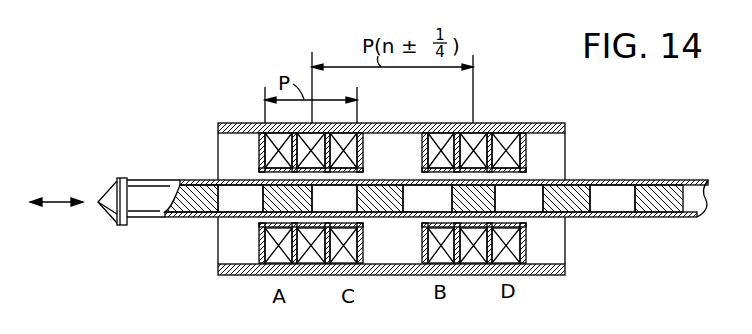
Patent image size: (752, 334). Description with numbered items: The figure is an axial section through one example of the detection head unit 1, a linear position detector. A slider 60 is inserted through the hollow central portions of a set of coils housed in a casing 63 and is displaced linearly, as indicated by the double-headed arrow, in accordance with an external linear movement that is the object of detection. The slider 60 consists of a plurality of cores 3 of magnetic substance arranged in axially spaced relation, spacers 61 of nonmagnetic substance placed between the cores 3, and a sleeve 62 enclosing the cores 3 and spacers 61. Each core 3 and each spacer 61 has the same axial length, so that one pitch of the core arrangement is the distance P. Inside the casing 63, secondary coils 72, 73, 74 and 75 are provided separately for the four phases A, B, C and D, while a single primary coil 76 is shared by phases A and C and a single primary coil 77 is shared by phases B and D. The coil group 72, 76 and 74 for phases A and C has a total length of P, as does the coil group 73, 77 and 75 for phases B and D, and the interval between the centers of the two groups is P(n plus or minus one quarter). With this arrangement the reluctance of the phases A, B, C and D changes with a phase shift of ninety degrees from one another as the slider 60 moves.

The linear pulse motor 1 is at (138, 122).
The core 3 is at (188, 210).
The slider 60 is at (167, 179).
The spacer 61 is at (233, 204).
The sleeve 62 is at (616, 180).
The casing 63 is at (545, 123).
The secondary coil 72 is at (262, 148).
The secondary coil 73 is at (432, 124).
The secondary coil 74 is at (356, 150).
The secondary coil 75 is at (514, 150).
The primary coil 76 is at (307, 124).
The primary coil 77 is at (478, 124).